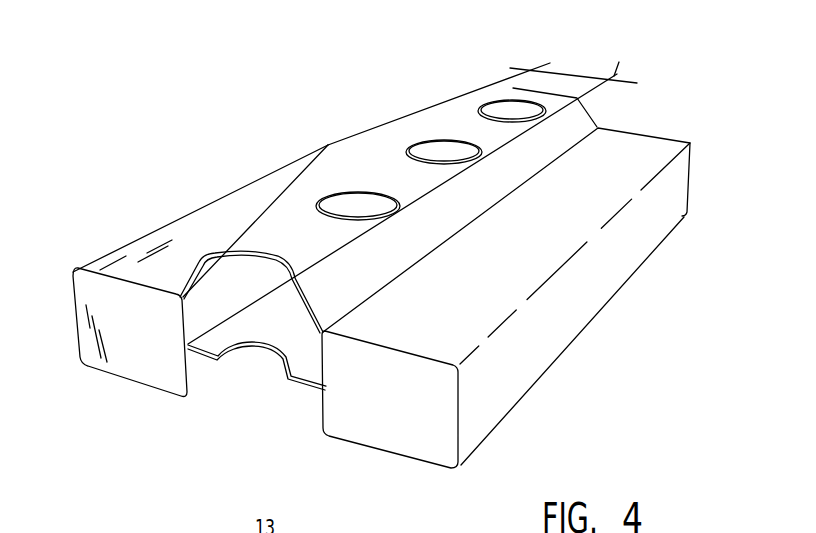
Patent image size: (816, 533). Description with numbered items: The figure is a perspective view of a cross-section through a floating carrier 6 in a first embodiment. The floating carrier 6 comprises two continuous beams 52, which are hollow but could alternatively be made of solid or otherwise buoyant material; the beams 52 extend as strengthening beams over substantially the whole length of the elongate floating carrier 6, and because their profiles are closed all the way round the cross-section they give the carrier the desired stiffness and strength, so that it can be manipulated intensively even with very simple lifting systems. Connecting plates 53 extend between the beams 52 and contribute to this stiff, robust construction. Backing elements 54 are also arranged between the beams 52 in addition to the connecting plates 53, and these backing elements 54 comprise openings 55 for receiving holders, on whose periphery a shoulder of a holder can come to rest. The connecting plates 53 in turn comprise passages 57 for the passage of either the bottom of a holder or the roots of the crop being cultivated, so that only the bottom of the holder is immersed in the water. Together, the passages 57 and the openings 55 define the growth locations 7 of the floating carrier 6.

The floating carrier 6 is at (188, 144).
The growth locations 7 is at (306, 216).
The continuous beams 52 is at (122, 268).
The connecting plates 53 is at (218, 345).
The backing elements 54 is at (478, 100).
The openings 55 is at (360, 203).
The passages 57 is at (322, 340).